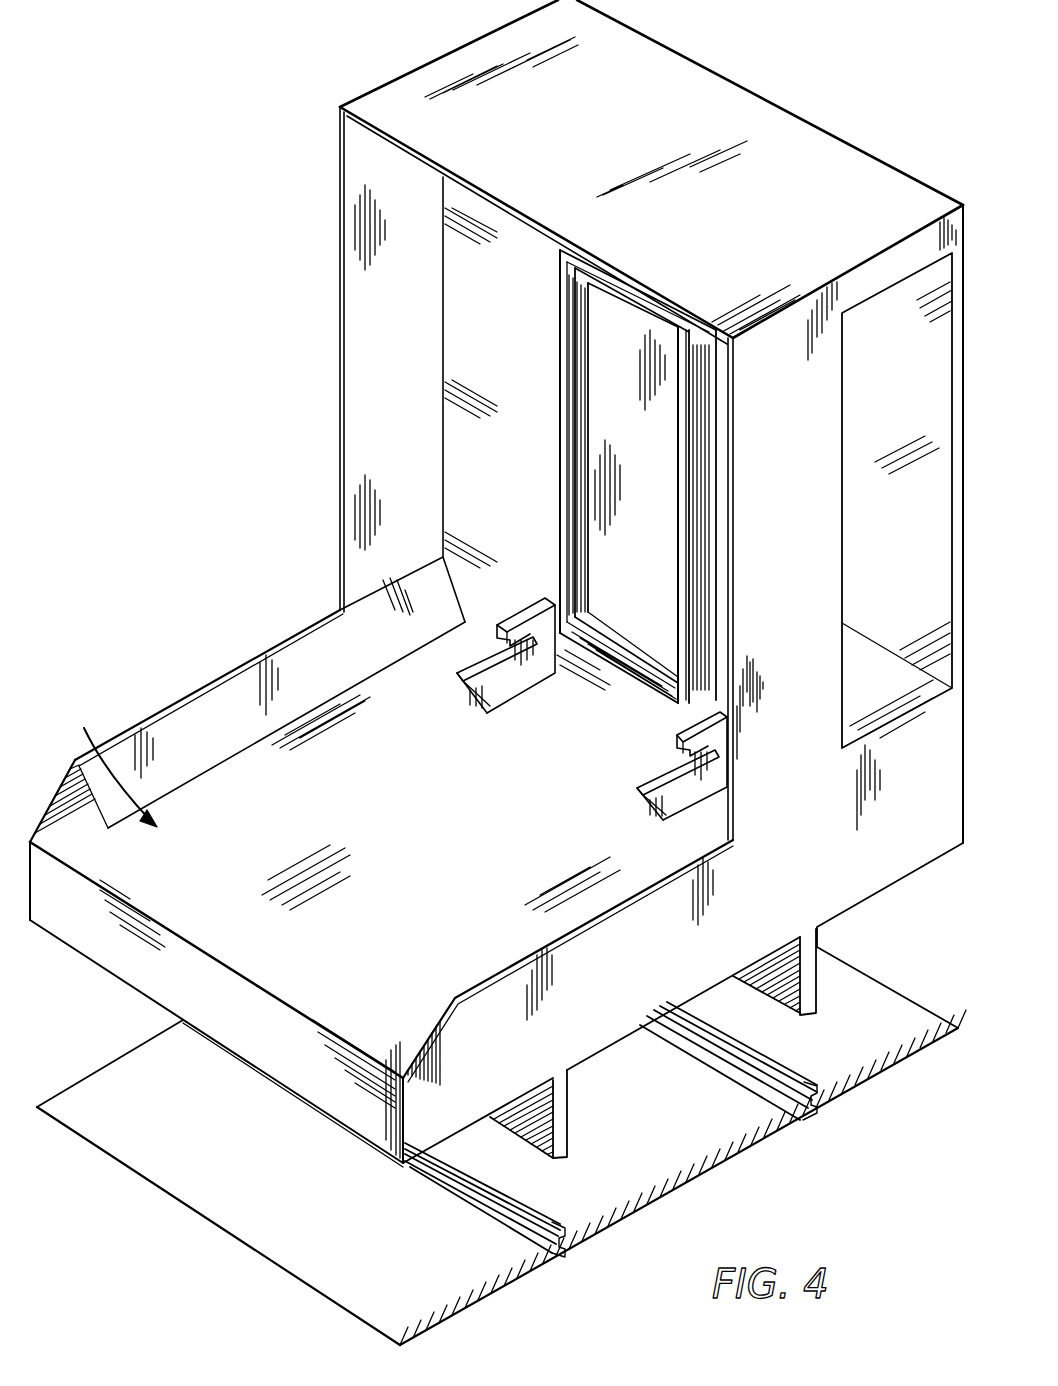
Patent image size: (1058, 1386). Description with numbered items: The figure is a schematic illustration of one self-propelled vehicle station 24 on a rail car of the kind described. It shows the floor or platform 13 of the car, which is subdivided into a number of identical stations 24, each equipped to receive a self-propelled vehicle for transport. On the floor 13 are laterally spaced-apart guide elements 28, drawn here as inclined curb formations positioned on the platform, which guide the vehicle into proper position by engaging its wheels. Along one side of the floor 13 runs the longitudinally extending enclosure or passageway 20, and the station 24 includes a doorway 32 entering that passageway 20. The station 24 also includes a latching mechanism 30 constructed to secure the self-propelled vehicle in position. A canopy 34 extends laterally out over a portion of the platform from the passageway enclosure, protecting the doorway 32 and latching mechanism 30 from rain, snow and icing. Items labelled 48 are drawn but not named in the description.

The floor or platform 13 is at (458, 852).
The longitudinally extending enclosure or passageway 20 is at (797, 128).
The station 24 is at (111, 761).
The guide elements 28 is at (244, 728).
The latching mechanism 30 is at (633, 800).
The doorway 32 is at (578, 330).
The canopy 34 is at (404, 352).
The clips 48 is at (485, 668).